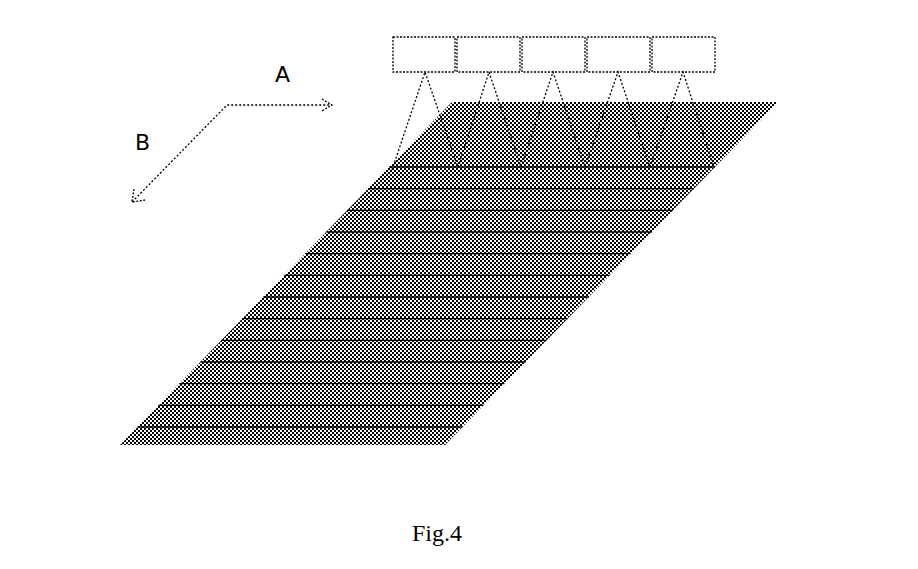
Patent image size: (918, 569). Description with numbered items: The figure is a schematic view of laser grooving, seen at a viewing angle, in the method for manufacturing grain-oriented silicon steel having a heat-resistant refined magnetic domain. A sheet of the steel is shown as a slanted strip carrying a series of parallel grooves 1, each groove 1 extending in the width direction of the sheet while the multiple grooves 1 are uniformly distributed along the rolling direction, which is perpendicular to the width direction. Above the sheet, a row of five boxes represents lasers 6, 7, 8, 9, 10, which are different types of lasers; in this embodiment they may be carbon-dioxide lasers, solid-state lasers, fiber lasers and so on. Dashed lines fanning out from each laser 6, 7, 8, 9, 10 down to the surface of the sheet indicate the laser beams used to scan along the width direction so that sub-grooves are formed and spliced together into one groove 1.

The groove 1 is at (427, 167).
The laser 6 is at (425, 103).
The laser 7 is at (489, 102).
The laser 8 is at (553, 102).
The laser 9 is at (617, 102).
The laser 10 is at (682, 102).